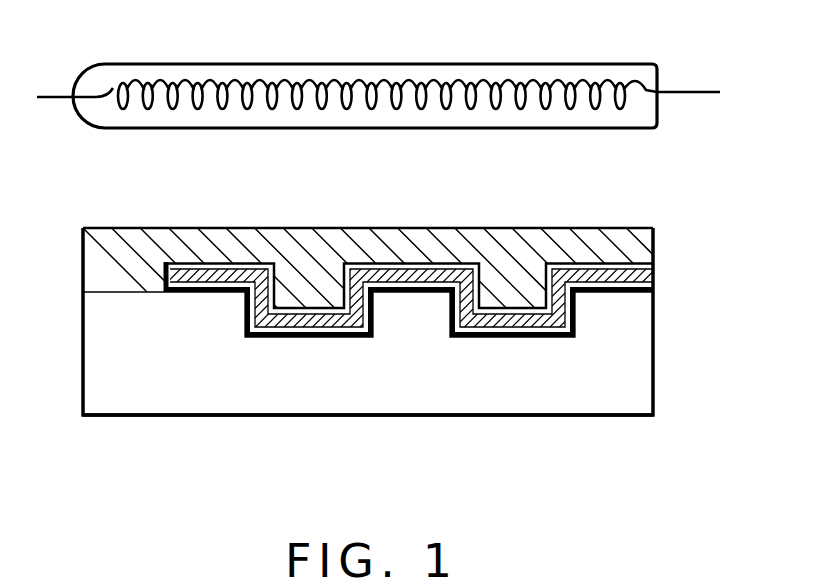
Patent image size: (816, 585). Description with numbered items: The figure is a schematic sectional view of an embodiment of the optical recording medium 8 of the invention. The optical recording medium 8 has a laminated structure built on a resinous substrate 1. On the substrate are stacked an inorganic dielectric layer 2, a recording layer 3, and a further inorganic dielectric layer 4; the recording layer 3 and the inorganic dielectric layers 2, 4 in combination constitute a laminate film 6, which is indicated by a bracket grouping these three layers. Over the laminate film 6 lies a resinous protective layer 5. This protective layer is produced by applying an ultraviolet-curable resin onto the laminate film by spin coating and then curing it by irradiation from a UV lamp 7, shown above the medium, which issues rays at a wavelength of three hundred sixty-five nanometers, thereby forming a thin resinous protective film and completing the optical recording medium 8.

The resinous substrate 1 is at (561, 398).
The inorganic dielectric layer 2 is at (655, 288).
The recording layer 3 is at (655, 273).
The inorganic dielectric layer 4 is at (383, 264).
The resinous protective layer 5 is at (558, 232).
The laminate film 6 is at (461, 293).
The UV lamp 7 is at (508, 68).
The optical recording medium 8 is at (299, 414).